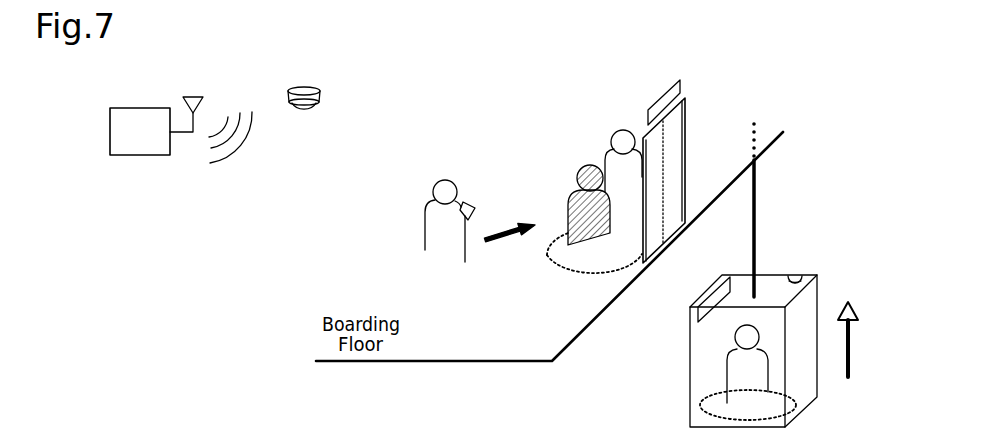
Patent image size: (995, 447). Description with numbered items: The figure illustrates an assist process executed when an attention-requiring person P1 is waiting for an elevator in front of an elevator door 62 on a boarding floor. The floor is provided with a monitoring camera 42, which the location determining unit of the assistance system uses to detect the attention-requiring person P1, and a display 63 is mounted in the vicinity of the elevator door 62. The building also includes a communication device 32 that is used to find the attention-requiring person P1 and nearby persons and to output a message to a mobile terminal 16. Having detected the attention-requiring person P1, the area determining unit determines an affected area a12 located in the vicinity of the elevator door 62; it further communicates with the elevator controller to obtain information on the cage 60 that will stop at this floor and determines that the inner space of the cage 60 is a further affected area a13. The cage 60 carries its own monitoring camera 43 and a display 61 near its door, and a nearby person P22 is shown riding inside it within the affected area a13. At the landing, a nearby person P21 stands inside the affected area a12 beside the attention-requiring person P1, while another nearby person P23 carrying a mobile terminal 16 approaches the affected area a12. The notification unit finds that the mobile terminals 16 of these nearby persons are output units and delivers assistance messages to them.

The communication device 32 is at (140, 108).
The monitoring camera 42 is at (321, 95).
The nearby person P23 is at (447, 180).
The mobile terminal 16 is at (473, 207).
The affected area a12 is at (548, 262).
The attention-requiring person P1 is at (590, 165).
The nearby person P21 is at (624, 129).
The elevator door 62 is at (687, 130).
The display 63 is at (683, 88).
The cage 60 is at (808, 405).
The display 61 is at (720, 281).
The monitoring camera 43 is at (802, 280).
The nearby person P22 is at (726, 367).
The affected area a13 is at (701, 410).